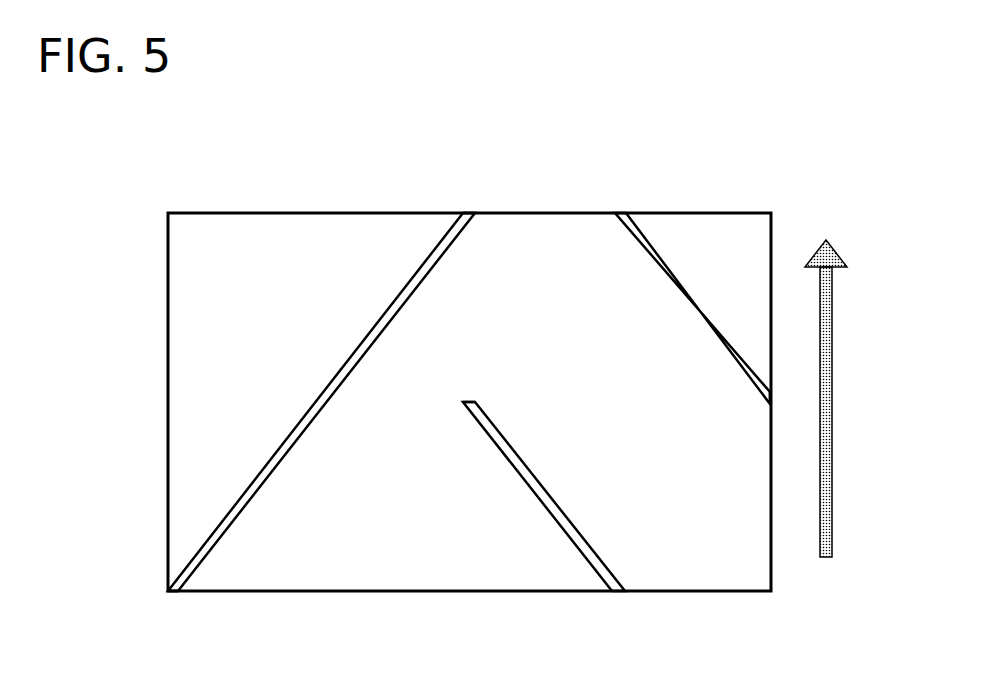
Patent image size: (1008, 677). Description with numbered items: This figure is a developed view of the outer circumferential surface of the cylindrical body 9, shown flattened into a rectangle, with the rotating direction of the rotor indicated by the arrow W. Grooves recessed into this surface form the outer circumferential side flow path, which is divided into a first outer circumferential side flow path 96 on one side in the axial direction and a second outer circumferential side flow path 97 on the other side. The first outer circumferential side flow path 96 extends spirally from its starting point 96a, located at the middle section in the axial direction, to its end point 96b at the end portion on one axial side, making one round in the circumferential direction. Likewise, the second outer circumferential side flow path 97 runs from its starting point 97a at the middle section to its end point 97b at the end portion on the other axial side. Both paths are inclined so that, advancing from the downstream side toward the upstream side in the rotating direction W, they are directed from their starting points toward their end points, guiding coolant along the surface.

The cylindrical body 9 is at (642, 192).
The first outer circumferential side flow path 96 is at (346, 372).
The starting point 96a is at (467, 212).
The end point 96b is at (167, 590).
The second outer circumferential side flow path 97 is at (673, 280).
The starting point 97a is at (467, 401).
The end point 97b is at (773, 403).
The arrow W is at (833, 450).